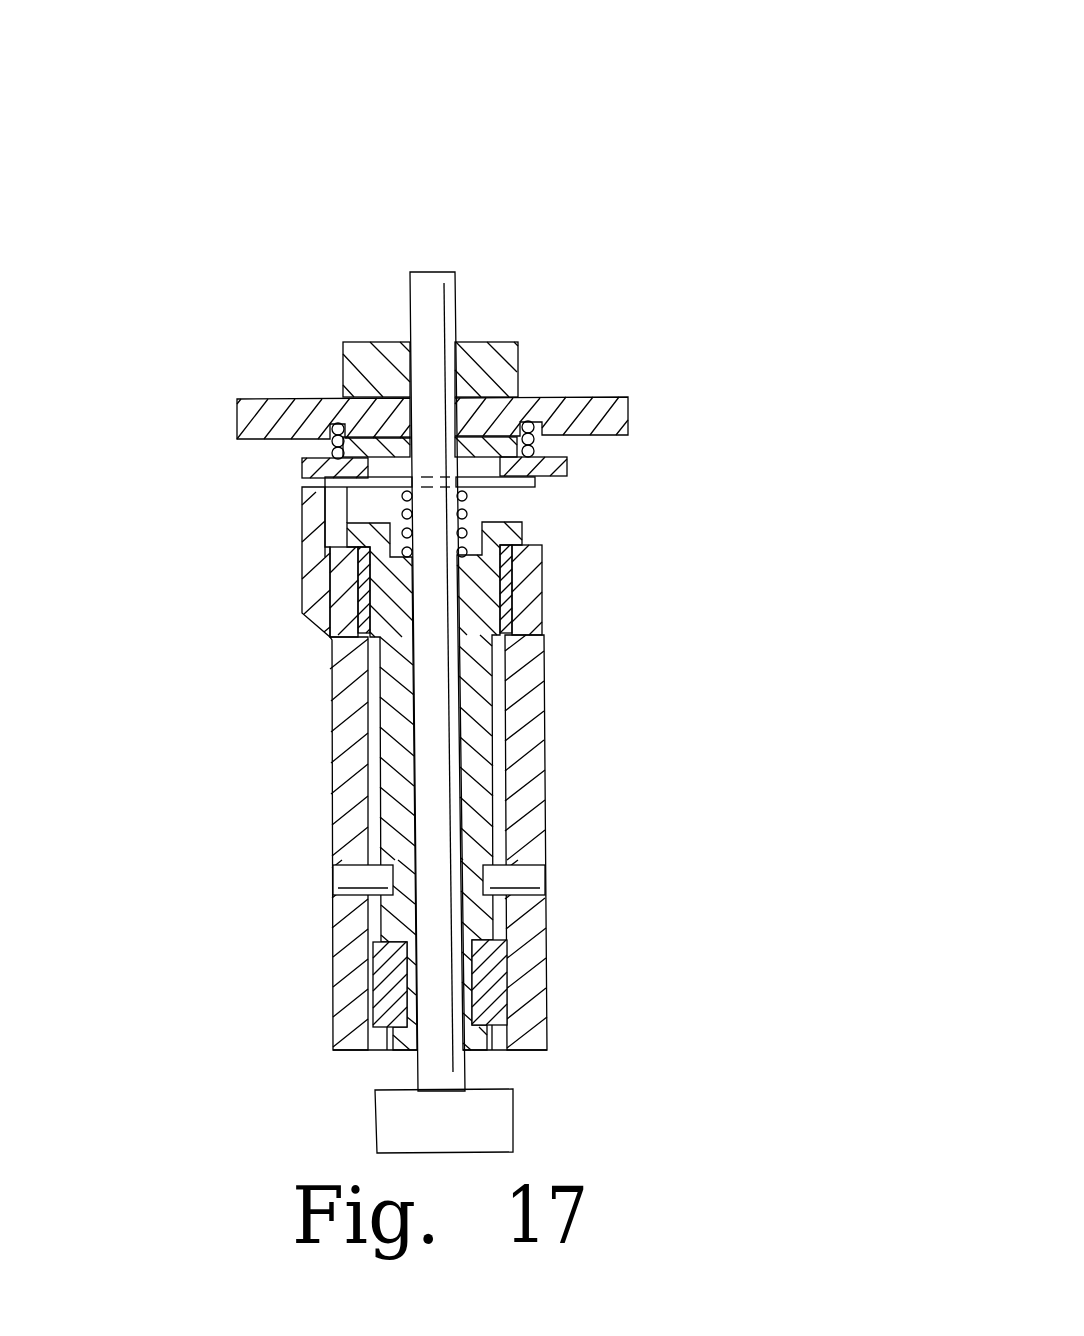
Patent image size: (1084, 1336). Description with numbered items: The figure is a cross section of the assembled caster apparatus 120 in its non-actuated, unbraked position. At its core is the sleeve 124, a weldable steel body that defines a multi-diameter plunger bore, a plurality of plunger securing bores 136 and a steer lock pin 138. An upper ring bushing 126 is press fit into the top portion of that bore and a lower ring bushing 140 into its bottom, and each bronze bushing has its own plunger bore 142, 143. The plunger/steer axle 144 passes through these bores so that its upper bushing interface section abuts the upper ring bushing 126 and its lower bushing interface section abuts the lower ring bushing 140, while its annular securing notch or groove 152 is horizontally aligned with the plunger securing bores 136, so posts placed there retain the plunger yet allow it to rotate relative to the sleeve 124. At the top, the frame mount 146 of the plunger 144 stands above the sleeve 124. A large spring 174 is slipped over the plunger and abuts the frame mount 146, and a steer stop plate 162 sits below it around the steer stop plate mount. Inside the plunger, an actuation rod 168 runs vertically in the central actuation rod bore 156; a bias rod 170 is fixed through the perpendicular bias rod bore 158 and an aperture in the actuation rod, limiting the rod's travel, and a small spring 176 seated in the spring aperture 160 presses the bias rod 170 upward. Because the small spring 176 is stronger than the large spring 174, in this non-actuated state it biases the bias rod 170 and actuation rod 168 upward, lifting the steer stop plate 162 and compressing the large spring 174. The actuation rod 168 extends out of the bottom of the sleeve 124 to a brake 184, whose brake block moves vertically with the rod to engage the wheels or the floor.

The caster apparatus 120 is at (682, 78).
The sleeve 124 is at (290, 803).
The upper ring bushing 126 is at (510, 580).
The plunger securing bores 136 is at (535, 870).
The steer lock pin 138 is at (280, 537).
The lower ring bushing 140 is at (498, 975).
The plunger bore 142 is at (493, 605).
The plunger bore 143 is at (476, 998).
The plunger/steer axle 144 is at (565, 365).
The frame mount 146 is at (522, 333).
The annular securing notch or groove 152 is at (393, 870).
The actuation rod bore 156 is at (452, 740).
The bias rod bore 158 is at (507, 522).
The spring aperture 160 is at (476, 530).
The steer stop plate 162 is at (567, 463).
The actuation rod 168 is at (453, 270).
The bias rod 170 is at (353, 484).
The large spring 174 is at (342, 433).
The small spring 176 is at (350, 507).
The brake 184 is at (524, 1126).